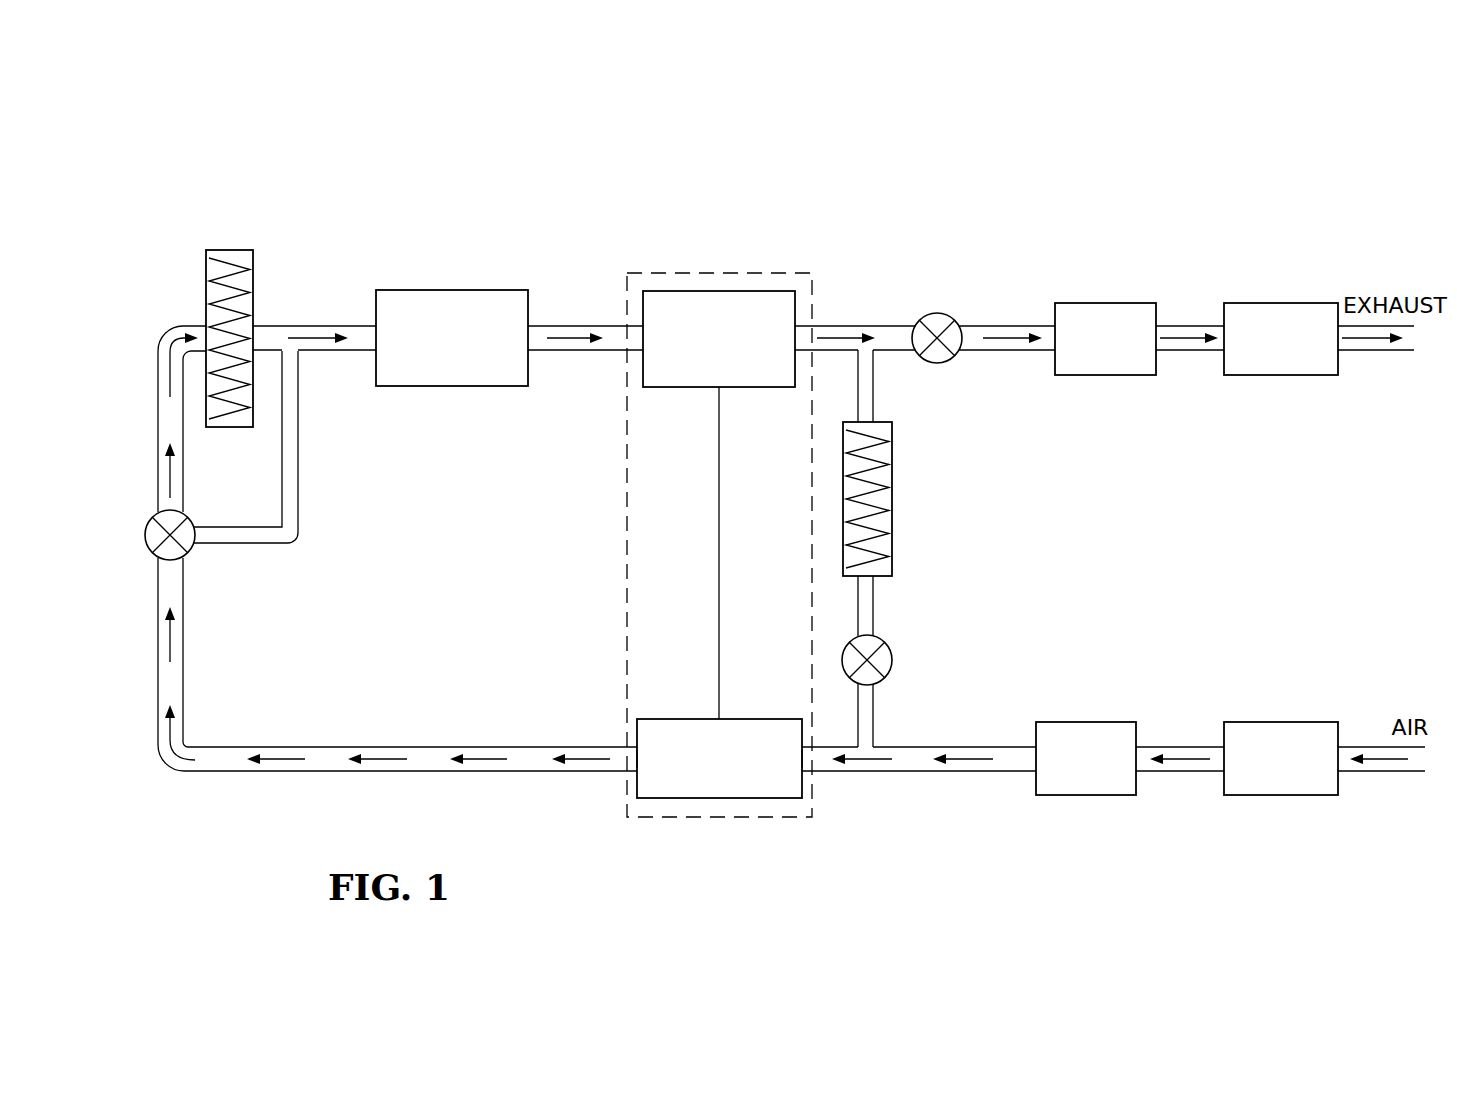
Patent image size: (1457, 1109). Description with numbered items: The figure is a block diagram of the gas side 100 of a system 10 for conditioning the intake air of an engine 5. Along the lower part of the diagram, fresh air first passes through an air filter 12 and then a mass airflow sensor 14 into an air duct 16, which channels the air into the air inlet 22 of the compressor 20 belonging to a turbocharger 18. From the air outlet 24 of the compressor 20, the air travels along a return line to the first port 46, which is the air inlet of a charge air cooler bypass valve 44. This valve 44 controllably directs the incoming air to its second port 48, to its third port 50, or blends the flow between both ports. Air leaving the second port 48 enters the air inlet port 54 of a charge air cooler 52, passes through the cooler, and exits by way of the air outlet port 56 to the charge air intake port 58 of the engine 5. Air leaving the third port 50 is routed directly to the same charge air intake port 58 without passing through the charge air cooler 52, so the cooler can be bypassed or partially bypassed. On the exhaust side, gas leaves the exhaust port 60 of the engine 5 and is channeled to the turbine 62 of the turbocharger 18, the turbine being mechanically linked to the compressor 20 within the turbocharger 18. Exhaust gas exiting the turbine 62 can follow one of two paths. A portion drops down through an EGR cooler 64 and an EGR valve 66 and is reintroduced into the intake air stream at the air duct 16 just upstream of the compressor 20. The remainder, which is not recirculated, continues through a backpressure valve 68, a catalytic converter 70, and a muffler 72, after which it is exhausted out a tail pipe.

The system 10 is at (506, 119).
The gas side 100 is at (599, 187).
The engine 5 is at (458, 290).
The air filter 12 is at (1307, 795).
The mass airflow sensor 14 is at (1117, 795).
The air duct 16 is at (917, 773).
The turbocharger 18 is at (813, 291).
The compressor 20 is at (735, 798).
The air inlet 22 is at (802, 773).
The air outlet 24 is at (637, 773).
The charge air cooler bypass valve 44 is at (147, 528).
The first port 46 is at (160, 558).
The second port 48 is at (178, 512).
The third port 50 is at (195, 543).
The charge air cooler 52 is at (206, 272).
The air inlet port 54 is at (206, 326).
The air outlet port 56 is at (253, 326).
The charge air intake port 58 is at (377, 326).
The exhaust port 60 is at (540, 326).
The turbine 62 is at (683, 291).
The EGR cooler 64 is at (892, 520).
The EGR valve 66 is at (890, 670).
The backpressure valve 68 is at (947, 363).
The catalytic converter 70 is at (1142, 375).
The muffler 72 is at (1302, 375).